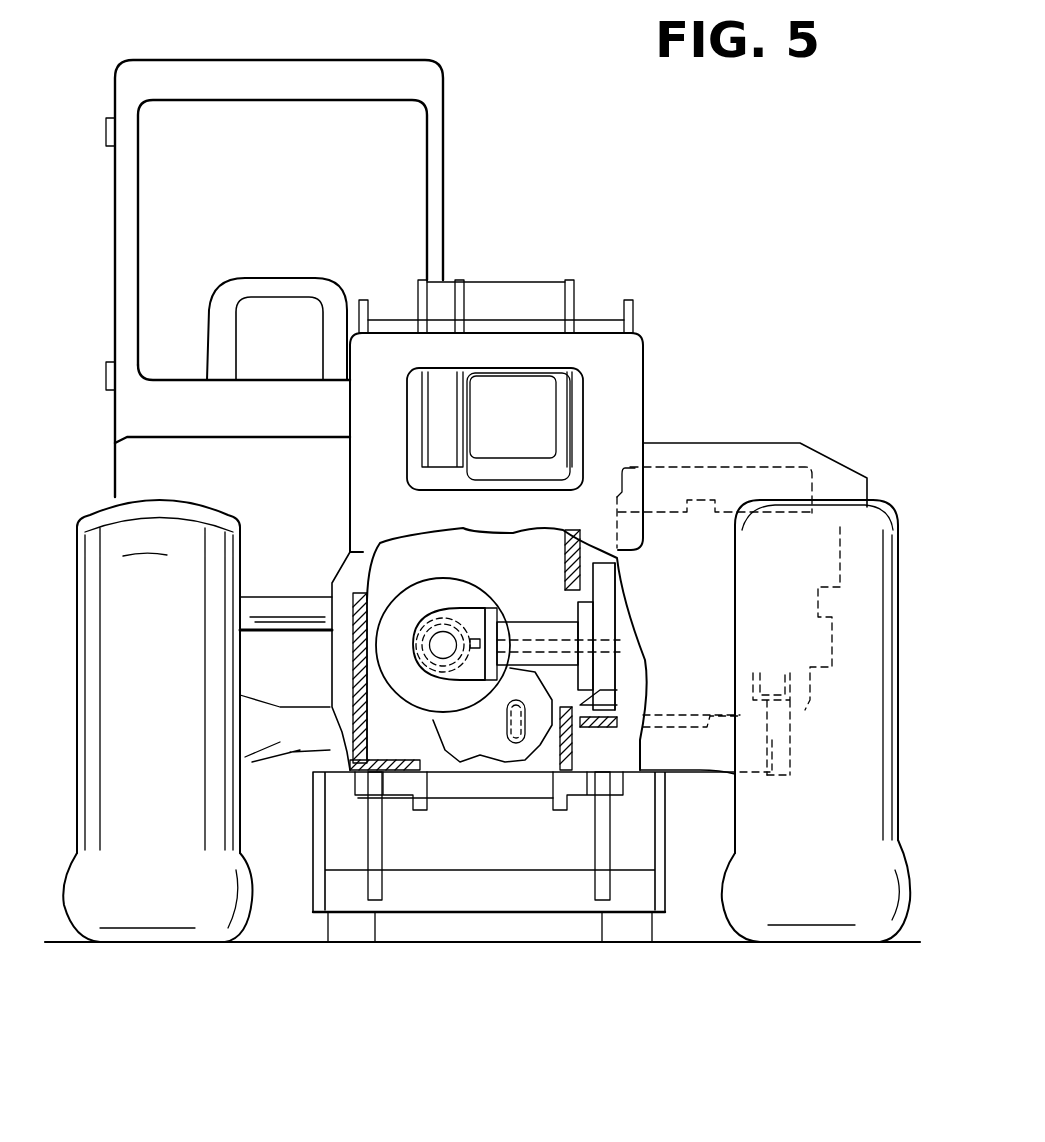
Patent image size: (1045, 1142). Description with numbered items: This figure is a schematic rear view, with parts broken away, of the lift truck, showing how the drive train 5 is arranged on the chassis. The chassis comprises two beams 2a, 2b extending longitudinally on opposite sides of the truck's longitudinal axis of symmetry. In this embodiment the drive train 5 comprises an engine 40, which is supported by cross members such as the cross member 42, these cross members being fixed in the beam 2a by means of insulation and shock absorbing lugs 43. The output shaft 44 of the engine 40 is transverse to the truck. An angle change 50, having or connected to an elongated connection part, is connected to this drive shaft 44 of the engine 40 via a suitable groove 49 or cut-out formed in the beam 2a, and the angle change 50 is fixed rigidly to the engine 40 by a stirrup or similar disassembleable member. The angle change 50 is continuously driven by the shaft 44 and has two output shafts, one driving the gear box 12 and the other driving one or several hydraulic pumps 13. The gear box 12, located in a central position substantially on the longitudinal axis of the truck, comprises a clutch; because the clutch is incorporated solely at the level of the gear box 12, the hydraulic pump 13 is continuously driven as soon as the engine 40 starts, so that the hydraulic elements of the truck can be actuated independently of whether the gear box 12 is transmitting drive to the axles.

The drive train 5 is at (707, 380).
The gear box 12 is at (405, 582).
The hydraulic pump 13 is at (420, 673).
The angle change 50 is at (470, 636).
The groove 49 is at (562, 600).
The output shaft 44 is at (575, 655).
The engine 40 is at (723, 517).
The cross member 42 is at (768, 730).
The insulation and shock absorbing lugs 43 is at (770, 767).
The beam 2a is at (565, 750).
The beam 2b is at (347, 760).